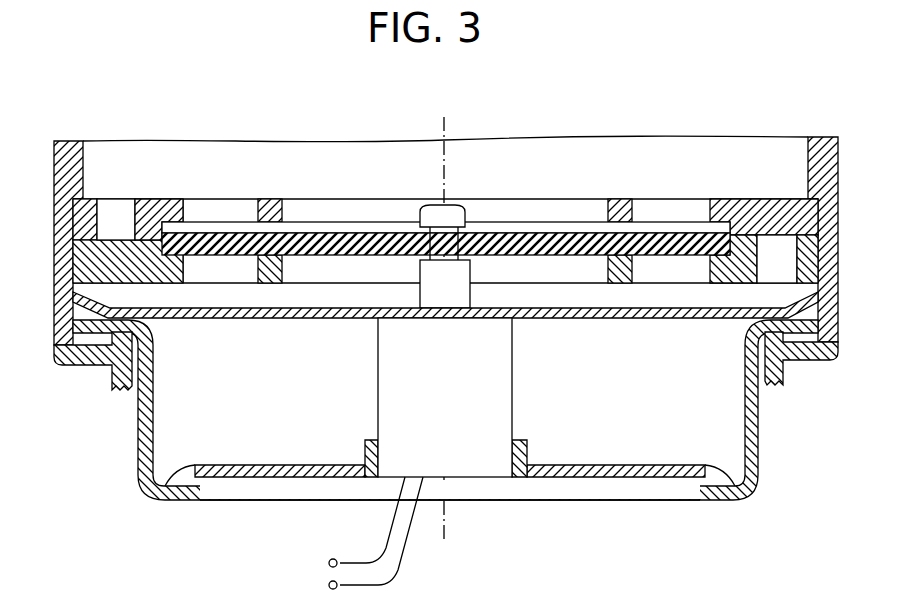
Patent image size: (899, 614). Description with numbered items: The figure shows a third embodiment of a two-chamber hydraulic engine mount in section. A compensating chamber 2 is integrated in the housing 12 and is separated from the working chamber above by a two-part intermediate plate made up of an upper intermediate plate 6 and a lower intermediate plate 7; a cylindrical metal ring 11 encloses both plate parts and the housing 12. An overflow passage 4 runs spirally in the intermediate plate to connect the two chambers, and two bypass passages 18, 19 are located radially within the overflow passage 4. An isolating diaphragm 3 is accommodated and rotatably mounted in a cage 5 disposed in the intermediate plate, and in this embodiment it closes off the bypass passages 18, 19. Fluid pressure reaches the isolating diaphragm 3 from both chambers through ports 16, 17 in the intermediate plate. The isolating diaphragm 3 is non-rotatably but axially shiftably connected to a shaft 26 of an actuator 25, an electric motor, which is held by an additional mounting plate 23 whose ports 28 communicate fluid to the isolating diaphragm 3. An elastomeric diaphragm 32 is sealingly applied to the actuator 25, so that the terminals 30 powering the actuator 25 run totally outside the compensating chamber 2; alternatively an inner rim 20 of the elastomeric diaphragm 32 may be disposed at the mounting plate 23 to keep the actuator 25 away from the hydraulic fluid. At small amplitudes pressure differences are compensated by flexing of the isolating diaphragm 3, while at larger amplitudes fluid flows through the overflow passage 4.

The compensating chamber 2 is at (640, 445).
The isolating diaphragm 3 is at (330, 240).
The overflow passage 4 is at (118, 215).
The cage 5 is at (186, 176).
The upper intermediate plate 6 is at (82, 222).
The lower intermediate plate 7 is at (88, 262).
The cylindrical metal ring 11 is at (826, 160).
The housing 12 is at (775, 375).
The port 16 is at (537, 215).
The port 17 is at (578, 272).
The bypass passage 18 is at (232, 213).
The bypass passage 19 is at (684, 207).
The inner rim 20 is at (523, 447).
The mounting plate 23 is at (637, 312).
The actuator 25 is at (480, 450).
The shaft 26 is at (458, 222).
The ports 28 is at (200, 315).
The terminals 30 is at (330, 573).
The elastomeric diaphragm 32 is at (228, 470).